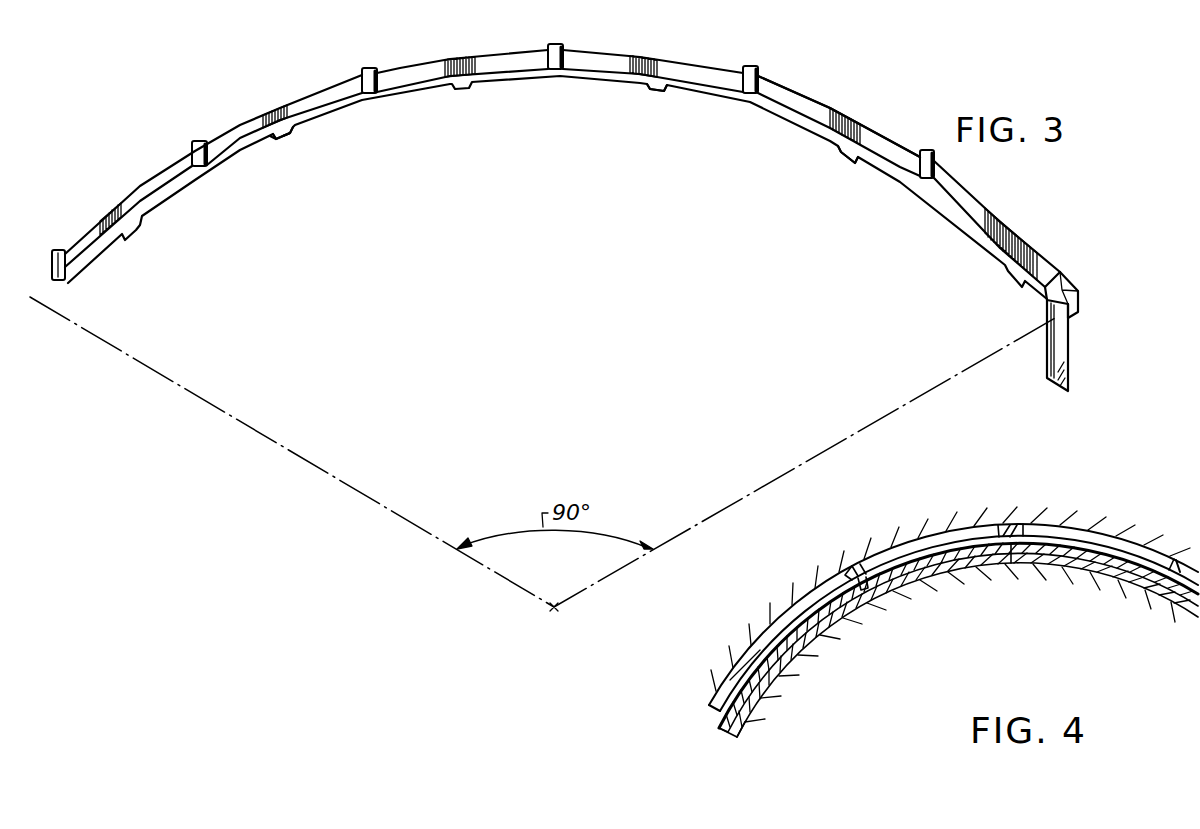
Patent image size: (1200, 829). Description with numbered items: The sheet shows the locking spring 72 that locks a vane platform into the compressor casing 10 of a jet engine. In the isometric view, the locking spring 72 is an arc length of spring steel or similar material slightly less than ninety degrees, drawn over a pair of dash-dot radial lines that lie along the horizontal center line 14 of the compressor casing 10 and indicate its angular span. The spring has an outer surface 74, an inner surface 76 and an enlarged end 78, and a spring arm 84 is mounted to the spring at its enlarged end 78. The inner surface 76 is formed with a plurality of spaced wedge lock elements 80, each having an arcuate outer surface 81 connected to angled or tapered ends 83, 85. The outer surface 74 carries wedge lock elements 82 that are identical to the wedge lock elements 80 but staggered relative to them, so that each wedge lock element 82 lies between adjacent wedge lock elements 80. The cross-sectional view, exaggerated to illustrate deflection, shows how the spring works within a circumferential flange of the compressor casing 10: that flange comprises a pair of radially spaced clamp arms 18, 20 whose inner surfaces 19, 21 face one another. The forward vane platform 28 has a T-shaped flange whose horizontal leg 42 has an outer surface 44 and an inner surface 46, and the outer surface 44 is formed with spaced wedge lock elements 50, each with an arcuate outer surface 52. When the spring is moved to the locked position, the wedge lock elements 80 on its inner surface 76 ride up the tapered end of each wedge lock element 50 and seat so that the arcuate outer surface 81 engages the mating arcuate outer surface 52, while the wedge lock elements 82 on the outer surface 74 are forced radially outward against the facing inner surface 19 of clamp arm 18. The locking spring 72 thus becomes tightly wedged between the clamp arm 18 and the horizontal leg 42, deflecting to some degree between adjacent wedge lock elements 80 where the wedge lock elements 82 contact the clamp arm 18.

In FIG. 4, the compressor casing 10 is at (975, 520).
In FIG. 3, the horizontal center line 14 is at (803, 462).
In FIG. 4, the clamp arm 18 is at (1047, 523).
In FIG. 4, the inner surface of clamp arm 19 is at (1087, 530).
In FIG. 4, the clamp arm 20 is at (993, 568).
In FIG. 4, the inner surface of clamp arm 21 is at (1063, 573).
In FIG. 4, the forward vane platform 28 is at (820, 637).
In FIG. 4, the horizontal leg 42 is at (930, 567).
In FIG. 4, the outer surface of horizontal leg 44 is at (918, 565).
In FIG. 4, the inner surface of horizontal leg 46 is at (970, 567).
In FIG. 4, the wedge lock element 50 is at (860, 590).
In FIG. 4, the arcuate outer surface 52 is at (858, 575).
In FIG. 3, the locking spring 72 is at (572, 100).
In FIG. 4, the locking spring 72 is at (1112, 548).
In FIG. 3, the outer surface of locking spring 74 is at (818, 105).
In FIG. 4, the outer surface of locking spring 74 is at (897, 550).
In FIG. 3, the inner surface of locking spring 76 is at (767, 107).
In FIG. 4, the inner surface of locking spring 76 is at (1037, 547).
In FIG. 3, the enlarged end 78 is at (1070, 283).
In FIG. 3, the wedge lock element 80 is at (842, 137).
In FIG. 4, the wedge lock element 80 is at (858, 578).
In FIG. 3, the arcuate outer surface 81 is at (287, 134).
In FIG. 3, the wedge lock element 82 is at (748, 93).
In FIG. 4, the wedge lock element 82 is at (1012, 530).
In FIG. 3, the tapered end 83 is at (272, 141).
In FIG. 3, the spring arm 84 is at (1062, 345).
In FIG. 3, the tapered end 85 is at (293, 127).